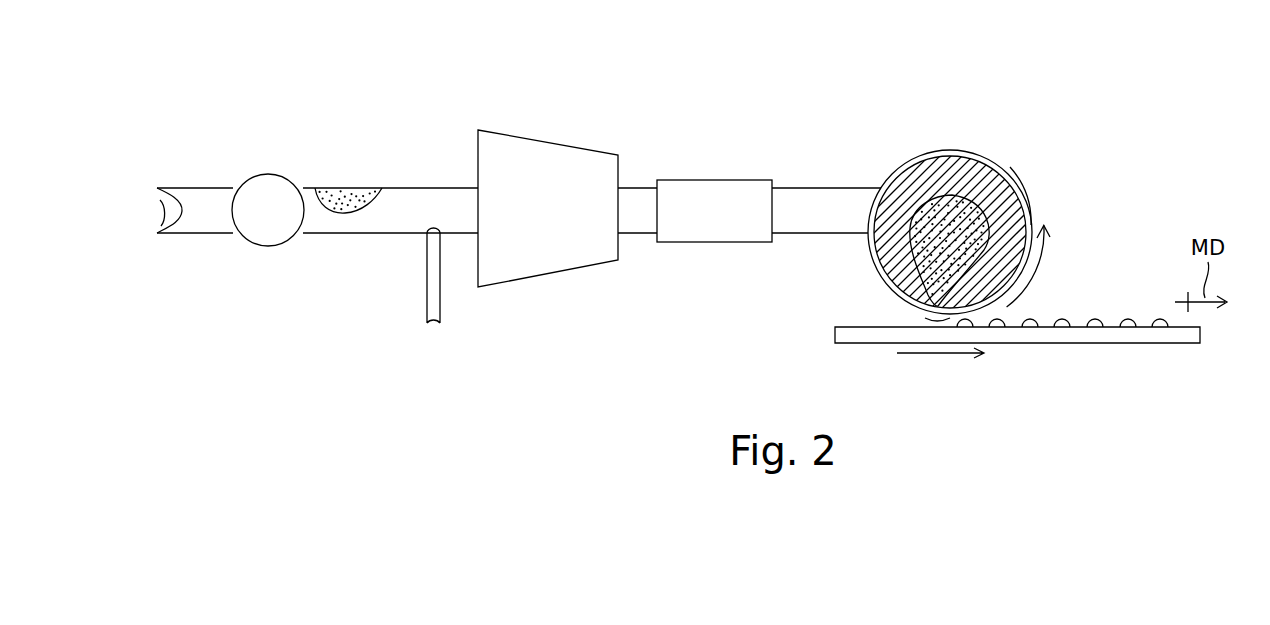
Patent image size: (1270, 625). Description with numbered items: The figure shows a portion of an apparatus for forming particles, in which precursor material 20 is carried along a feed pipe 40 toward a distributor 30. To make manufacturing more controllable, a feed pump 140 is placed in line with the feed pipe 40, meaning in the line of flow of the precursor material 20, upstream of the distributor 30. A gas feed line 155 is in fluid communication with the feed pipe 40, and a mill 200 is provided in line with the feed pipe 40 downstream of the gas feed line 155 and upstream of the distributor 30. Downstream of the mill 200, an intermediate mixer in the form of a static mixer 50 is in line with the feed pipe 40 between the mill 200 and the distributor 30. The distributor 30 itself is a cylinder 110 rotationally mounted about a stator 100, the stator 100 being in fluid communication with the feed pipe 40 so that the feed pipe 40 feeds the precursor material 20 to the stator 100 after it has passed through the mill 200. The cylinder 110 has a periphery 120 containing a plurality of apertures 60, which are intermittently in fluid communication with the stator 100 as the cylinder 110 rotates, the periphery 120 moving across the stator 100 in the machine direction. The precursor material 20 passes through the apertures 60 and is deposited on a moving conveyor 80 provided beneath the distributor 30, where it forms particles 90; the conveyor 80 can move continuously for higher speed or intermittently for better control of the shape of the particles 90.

The precursor material 20 is at (343, 188).
The distributor 30 is at (967, 183).
The feed pipe 40 is at (406, 224).
The static mixer 50 is at (703, 224).
The apertures 60 is at (980, 156).
The moving conveyor 80 is at (855, 336).
The particles 90 is at (1092, 318).
The stator 100 is at (1043, 223).
The cylinder 110 is at (1010, 167).
The periphery 120 is at (937, 308).
The feed pump 140 is at (252, 225).
The gas feed line 155 is at (425, 318).
The mill 200 is at (570, 222).